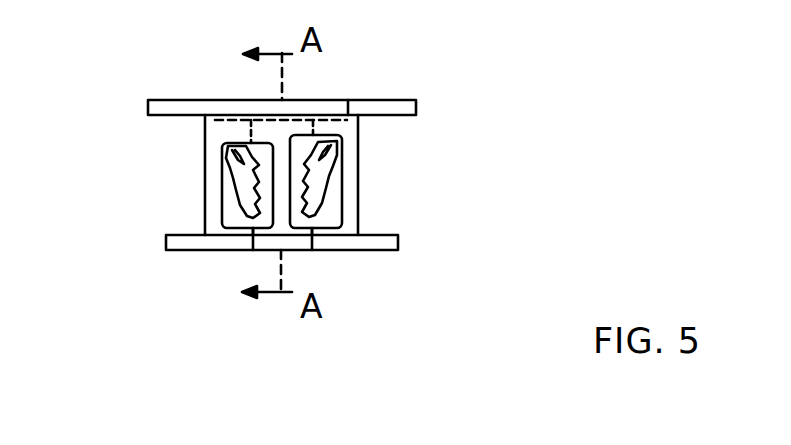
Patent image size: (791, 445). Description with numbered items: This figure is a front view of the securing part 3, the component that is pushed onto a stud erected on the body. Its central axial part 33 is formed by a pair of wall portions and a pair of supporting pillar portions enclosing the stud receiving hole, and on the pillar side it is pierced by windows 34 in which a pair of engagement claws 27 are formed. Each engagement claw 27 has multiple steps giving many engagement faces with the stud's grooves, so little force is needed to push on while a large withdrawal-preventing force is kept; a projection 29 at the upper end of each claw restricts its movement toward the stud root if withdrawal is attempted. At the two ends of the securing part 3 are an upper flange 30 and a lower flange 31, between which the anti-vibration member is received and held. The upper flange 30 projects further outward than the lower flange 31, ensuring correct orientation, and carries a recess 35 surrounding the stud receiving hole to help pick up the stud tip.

The securing part 3 is at (478, 148).
The engagement claw 27 is at (236, 190).
The projection 29 is at (234, 152).
The upper flange 30 is at (395, 106).
The lower flange 31 is at (398, 243).
The axial part 33 is at (347, 166).
The window 34 is at (230, 212).
The recess 35 is at (222, 98).